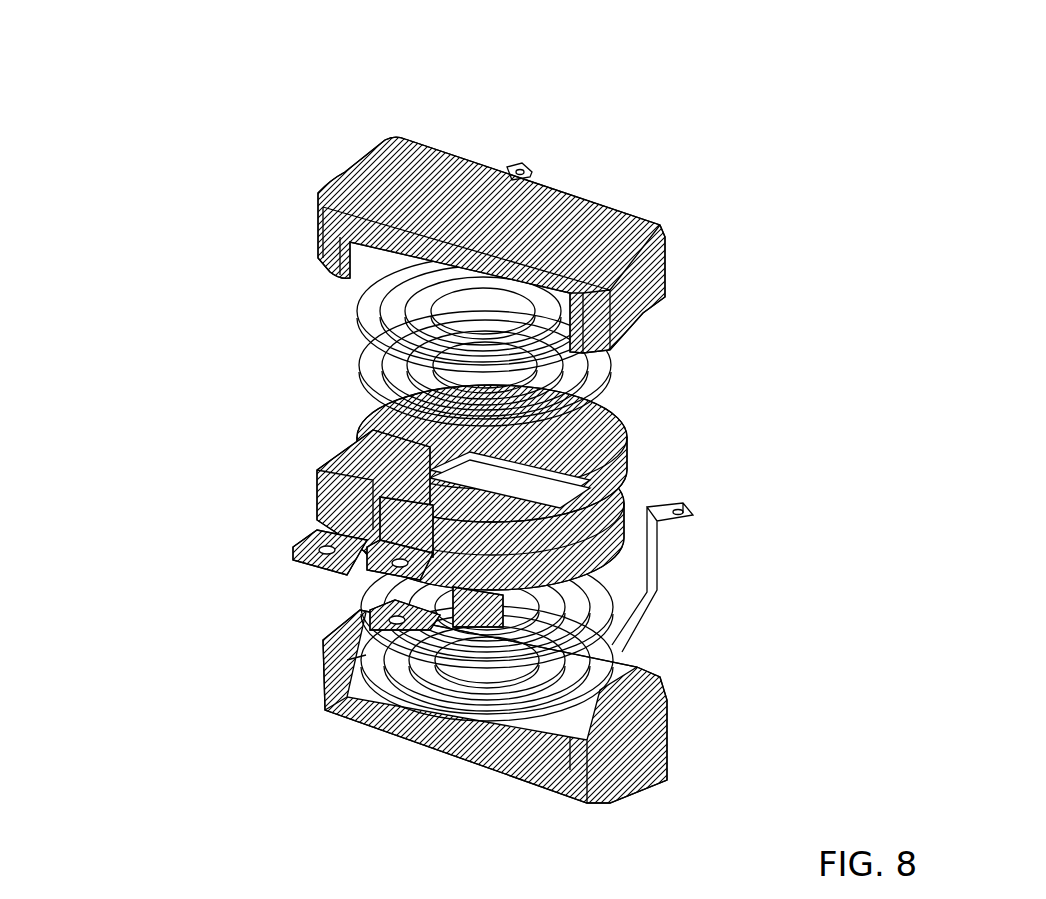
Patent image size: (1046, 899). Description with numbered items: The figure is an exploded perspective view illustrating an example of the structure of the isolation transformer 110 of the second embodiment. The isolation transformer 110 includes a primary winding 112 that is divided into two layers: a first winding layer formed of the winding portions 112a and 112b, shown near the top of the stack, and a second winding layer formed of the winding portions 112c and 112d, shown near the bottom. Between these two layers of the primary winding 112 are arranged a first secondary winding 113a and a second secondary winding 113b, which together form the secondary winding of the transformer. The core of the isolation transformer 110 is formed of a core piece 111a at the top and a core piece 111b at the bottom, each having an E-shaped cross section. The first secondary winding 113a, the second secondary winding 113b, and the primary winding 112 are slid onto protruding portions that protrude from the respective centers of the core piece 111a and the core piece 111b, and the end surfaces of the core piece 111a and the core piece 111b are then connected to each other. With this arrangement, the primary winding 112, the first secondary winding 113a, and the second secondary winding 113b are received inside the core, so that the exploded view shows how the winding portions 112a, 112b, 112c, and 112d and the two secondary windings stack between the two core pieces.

The isolation transformer 110 is at (491, 110).
The core piece 111a is at (652, 235).
The core piece 111b is at (655, 730).
The primary winding 112 is at (113, 192).
The winding portion 112a is at (375, 293).
The winding portion 112b is at (370, 356).
The winding portion 112c is at (355, 587).
The winding portion 112d is at (372, 655).
The first secondary winding 113a is at (612, 408).
The second secondary winding 113b is at (612, 495).